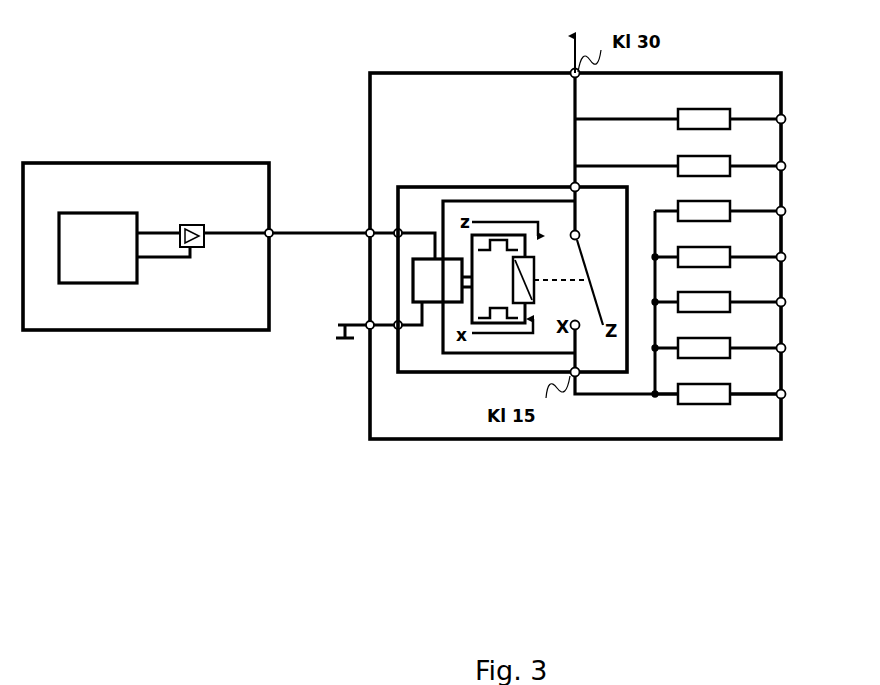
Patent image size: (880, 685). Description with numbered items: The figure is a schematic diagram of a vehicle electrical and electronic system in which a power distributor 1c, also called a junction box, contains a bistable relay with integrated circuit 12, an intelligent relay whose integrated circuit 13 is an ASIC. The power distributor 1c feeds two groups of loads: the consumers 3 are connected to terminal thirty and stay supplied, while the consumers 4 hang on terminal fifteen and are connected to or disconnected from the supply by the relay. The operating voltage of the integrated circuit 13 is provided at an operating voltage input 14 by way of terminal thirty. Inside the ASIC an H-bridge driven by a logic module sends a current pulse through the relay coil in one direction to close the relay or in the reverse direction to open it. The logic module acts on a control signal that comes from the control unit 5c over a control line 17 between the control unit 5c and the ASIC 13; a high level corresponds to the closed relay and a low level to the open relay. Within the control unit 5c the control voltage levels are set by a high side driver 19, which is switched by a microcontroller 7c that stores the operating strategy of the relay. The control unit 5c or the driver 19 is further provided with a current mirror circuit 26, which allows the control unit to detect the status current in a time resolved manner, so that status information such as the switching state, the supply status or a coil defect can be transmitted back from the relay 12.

The power distributor 1c is at (781, 73).
The consumer at terminal 30 3 is at (795, 105).
The consumer at terminal 15 4 is at (790, 200).
The control unit 5c is at (269, 163).
The microcontroller 7c is at (98, 248).
The bistable relay with integrated circuit 12 is at (455, 187).
The integrated circuit 13 is at (437, 280).
The operating voltage input 14 is at (574, 74).
The control line 17 is at (290, 233).
The high side driver 19 is at (196, 225).
The current mirror circuit 26 is at (190, 262).